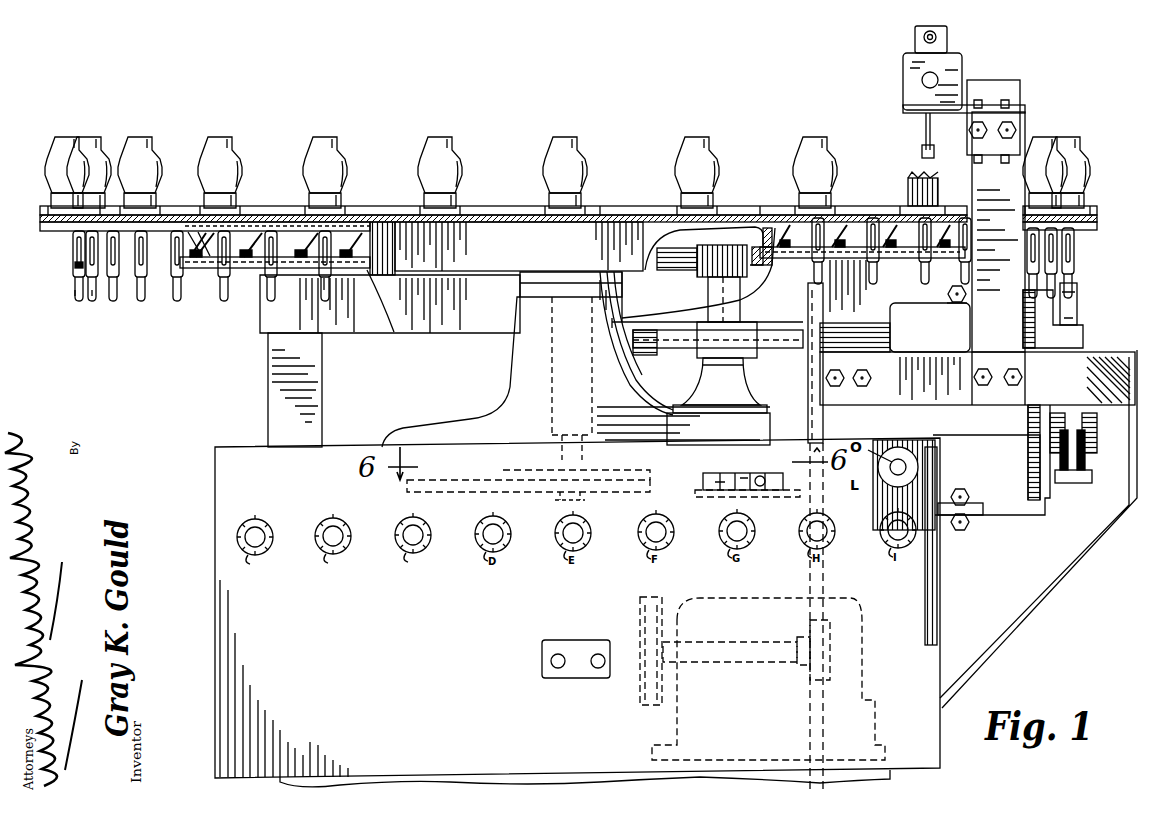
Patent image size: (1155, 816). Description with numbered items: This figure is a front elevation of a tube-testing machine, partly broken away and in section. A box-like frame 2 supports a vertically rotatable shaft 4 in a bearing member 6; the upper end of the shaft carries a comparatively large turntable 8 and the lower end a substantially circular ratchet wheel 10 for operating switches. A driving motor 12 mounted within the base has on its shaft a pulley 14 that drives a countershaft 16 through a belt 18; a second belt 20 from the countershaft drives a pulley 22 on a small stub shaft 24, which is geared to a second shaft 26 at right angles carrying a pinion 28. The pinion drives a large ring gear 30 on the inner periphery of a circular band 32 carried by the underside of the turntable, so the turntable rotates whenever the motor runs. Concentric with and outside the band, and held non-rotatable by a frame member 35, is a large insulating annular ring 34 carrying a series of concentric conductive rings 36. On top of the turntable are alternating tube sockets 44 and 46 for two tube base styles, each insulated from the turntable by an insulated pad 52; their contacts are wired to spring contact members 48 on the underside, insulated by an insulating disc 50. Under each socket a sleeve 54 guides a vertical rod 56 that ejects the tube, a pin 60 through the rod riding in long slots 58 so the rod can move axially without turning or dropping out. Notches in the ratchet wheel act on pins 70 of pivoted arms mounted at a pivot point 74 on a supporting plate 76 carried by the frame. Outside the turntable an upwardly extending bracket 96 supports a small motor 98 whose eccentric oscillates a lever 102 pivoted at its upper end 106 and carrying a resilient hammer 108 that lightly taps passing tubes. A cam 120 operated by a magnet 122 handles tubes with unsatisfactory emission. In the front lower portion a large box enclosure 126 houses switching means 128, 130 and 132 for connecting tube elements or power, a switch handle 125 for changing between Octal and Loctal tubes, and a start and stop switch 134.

The box-like frame 2 is at (295, 384).
The vertically rotatable shaft 4 is at (552, 355).
The bearing member 6 is at (525, 387).
The turntable 8 is at (633, 207).
The ratchet wheel 10 is at (690, 475).
The driving motor 12 is at (855, 608).
The pulley 14 is at (640, 675).
The countershaft 16 is at (765, 660).
The belt 18 is at (650, 700).
The second belt 20 is at (815, 398).
The pulley 22 is at (808, 374).
The stub shaft 24 is at (765, 340).
The second shaft 26 is at (722, 298).
The pinion 28 is at (692, 270).
The ring gear 30 is at (758, 260).
The circular band 32 is at (762, 262).
The annular ring 34 is at (250, 270).
The frame member 35 is at (285, 313).
The conductive rings 36 is at (246, 240).
The tube socket 44 is at (586, 205).
The tube socket 46 is at (518, 205).
The spring contact member 48 is at (210, 237).
The insulating disc 50 is at (352, 232).
The insulated pad 52 is at (458, 207).
The sleeve 54 is at (80, 236).
The vertical rod 56 is at (78, 290).
The slots 58 is at (78, 255).
The pin 60 is at (78, 268).
The pins 70 is at (765, 485).
The pivot point 74 is at (777, 472).
The supporting plate 76 is at (730, 494).
The bracket 96 is at (990, 325).
The small motor 98 is at (912, 63).
The lever 102 is at (922, 128).
The upper pivoted end 106 is at (922, 37).
The resilient hammer 108 is at (922, 153).
The cam 120 is at (1070, 303).
The magnet 122 is at (1090, 460).
The switch handle 125 is at (910, 462).
The box enclosure 126 is at (930, 560).
The switching means 128 is at (255, 519).
The switching means 130 is at (333, 518).
The switching means 132 is at (413, 517).
The start and stop switch 134 is at (568, 678).